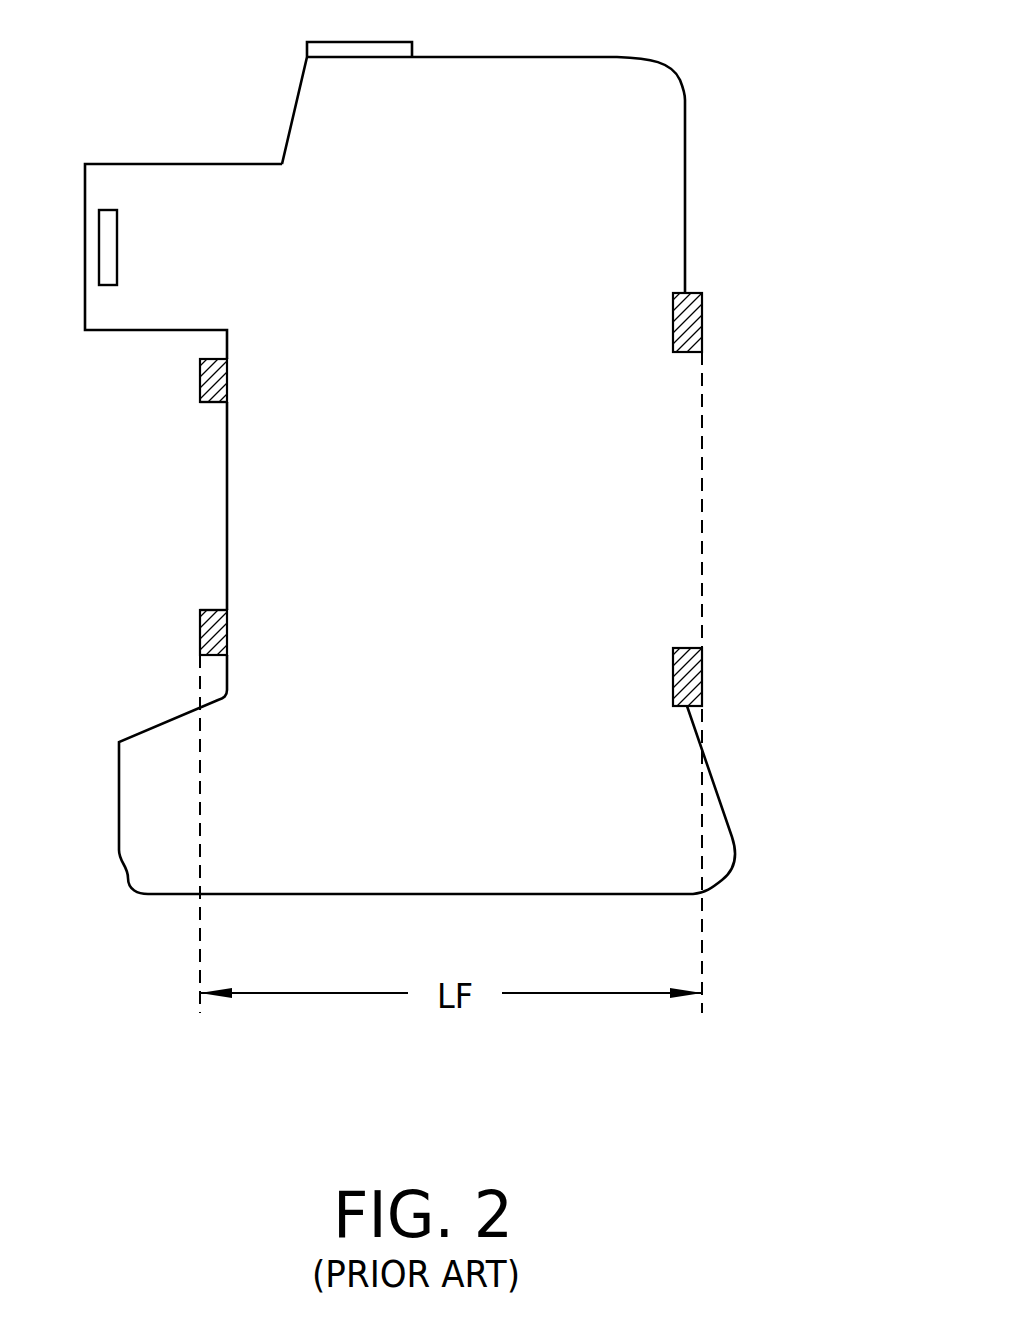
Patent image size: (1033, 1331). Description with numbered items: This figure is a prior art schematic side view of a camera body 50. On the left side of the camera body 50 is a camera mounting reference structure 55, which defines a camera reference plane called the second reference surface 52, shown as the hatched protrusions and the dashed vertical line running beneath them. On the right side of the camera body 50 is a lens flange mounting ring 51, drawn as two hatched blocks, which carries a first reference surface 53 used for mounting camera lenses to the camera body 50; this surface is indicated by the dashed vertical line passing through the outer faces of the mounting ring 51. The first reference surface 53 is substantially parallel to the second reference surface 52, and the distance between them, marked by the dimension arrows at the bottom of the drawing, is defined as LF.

The camera body 50 is at (640, 75).
The lens flange mounting ring 51 is at (693, 322).
The second reference surface 52 is at (200, 366).
The first reference surface 53 is at (700, 472).
The camera mounting reference structure 55 is at (217, 404).